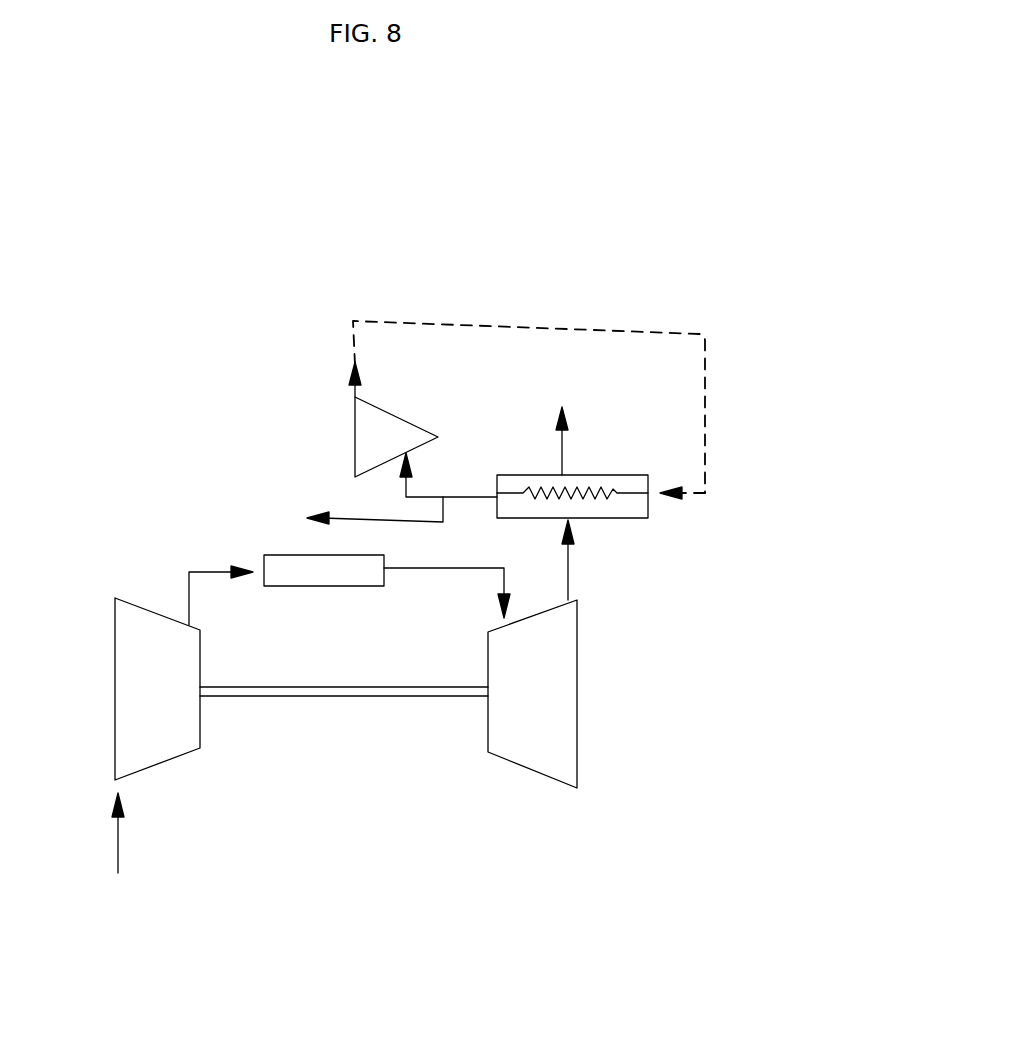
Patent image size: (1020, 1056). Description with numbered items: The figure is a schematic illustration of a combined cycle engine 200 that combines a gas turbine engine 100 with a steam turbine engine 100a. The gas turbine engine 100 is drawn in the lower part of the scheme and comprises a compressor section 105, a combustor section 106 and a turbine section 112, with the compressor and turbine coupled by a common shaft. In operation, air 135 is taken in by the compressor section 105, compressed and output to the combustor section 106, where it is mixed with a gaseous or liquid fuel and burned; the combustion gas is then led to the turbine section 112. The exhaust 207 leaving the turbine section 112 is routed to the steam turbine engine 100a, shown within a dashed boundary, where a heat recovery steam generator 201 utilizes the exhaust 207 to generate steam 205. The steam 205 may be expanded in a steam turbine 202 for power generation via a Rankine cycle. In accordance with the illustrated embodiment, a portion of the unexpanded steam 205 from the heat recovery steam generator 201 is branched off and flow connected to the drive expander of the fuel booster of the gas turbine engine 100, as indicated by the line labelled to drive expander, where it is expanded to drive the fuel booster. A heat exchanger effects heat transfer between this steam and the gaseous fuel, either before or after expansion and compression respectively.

The combined cycle engine 200 is at (739, 257).
The steam turbine engine 100a is at (728, 449).
The steam turbine 202 is at (355, 446).
The steam 205 is at (462, 495).
The heat recovery steam generator 201 is at (612, 476).
The exhaust 207 is at (564, 449).
The compressor section 105 is at (113, 624).
The air 135 is at (121, 857).
The combustor section 106 is at (337, 580).
The turbine section 112 is at (579, 745).
The gas turbine engine 100 is at (537, 837).